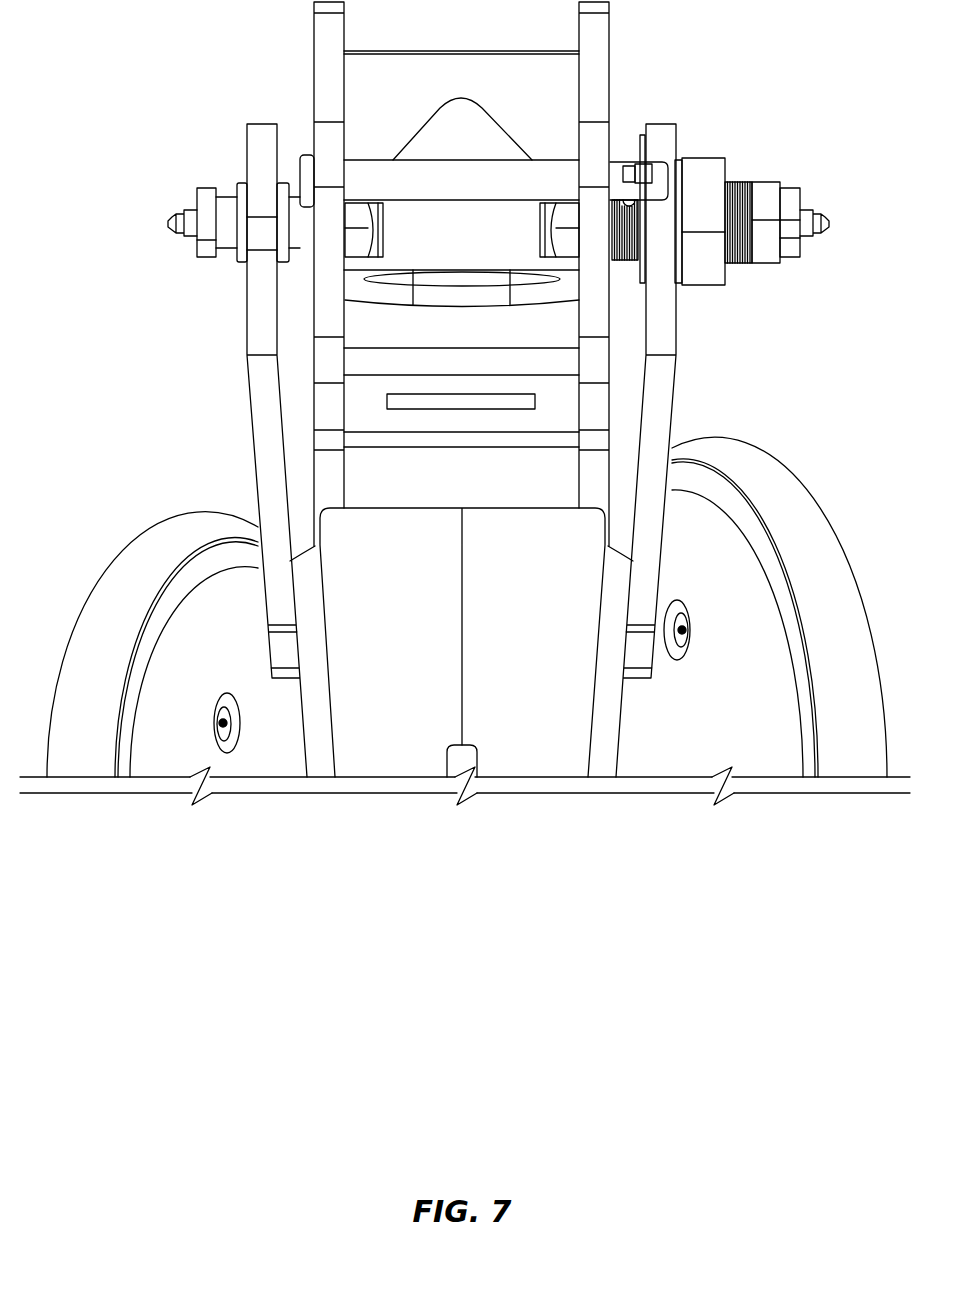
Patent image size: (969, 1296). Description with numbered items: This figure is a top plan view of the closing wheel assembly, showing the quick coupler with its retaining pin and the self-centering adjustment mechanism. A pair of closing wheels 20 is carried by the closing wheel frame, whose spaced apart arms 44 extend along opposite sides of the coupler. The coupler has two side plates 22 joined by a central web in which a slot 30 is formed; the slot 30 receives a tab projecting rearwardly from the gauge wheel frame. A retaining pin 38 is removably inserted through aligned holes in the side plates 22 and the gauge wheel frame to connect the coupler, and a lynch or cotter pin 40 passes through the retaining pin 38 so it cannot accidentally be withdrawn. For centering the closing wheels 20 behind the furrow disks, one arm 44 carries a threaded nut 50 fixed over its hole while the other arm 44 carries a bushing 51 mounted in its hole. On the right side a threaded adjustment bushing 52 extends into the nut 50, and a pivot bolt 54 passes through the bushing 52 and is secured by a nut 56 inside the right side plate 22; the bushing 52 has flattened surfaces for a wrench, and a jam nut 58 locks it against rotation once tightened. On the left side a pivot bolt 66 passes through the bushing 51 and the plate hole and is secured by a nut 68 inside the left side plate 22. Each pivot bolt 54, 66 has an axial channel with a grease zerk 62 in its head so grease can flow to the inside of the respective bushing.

The closing wheels 20 is at (148, 553).
The side plates 22 is at (325, 31).
The slot 30 is at (462, 401).
The retaining pin 38 is at (436, 165).
The lynch pin or cotter pin 40 is at (645, 173).
The arms 44 is at (263, 438).
The threaded nut 50 is at (677, 158).
The bushing 51 is at (246, 183).
The threaded adjustment bushing 52 is at (742, 263).
The pivot bolt 54 is at (790, 190).
The nut 56 is at (560, 228).
The jam nut 58 is at (707, 283).
The grease zerk 62 is at (170, 218).
The pivot bolt 66 is at (229, 242).
The nut 68 is at (363, 237).